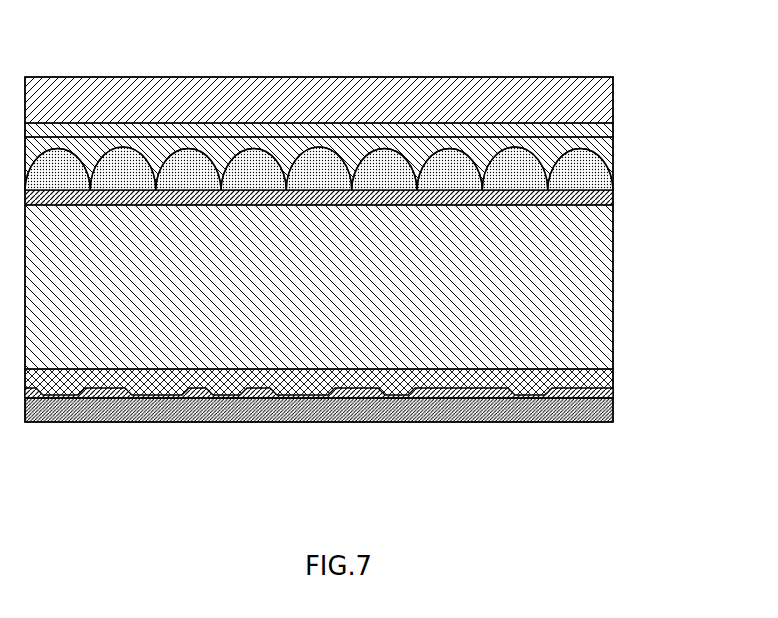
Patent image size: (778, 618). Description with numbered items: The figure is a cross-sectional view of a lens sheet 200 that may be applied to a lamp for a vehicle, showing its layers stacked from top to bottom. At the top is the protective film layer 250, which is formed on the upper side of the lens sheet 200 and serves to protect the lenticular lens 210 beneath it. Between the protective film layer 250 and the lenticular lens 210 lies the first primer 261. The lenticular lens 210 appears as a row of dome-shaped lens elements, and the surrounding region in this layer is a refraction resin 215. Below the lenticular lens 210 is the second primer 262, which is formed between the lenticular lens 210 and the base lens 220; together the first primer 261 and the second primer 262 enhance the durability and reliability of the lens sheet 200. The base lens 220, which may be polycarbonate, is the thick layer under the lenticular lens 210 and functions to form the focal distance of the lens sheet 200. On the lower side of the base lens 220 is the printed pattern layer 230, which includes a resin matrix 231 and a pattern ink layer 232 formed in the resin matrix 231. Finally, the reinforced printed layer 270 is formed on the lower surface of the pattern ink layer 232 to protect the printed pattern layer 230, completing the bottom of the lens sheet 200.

The lens sheet 200 is at (67, 55).
The protective film layer 250 is at (613, 100).
The first primer 261 is at (613, 127).
The refraction resin 215 is at (613, 152).
The lenticular lens 210 is at (610, 178).
The second primer 262 is at (613, 198).
The base lens 220 is at (605, 272).
The printed pattern layer 230 is at (385, 380).
The resin matrix 231 is at (613, 373).
The pattern ink layer 232 is at (613, 395).
The reinforced printed layer 270 is at (613, 417).